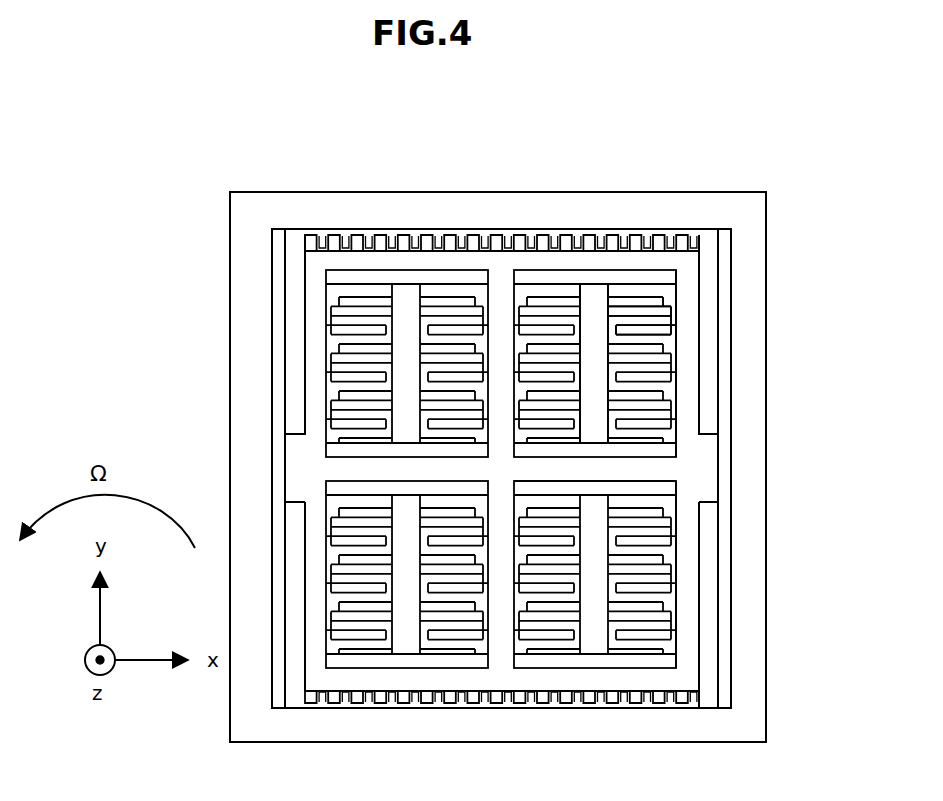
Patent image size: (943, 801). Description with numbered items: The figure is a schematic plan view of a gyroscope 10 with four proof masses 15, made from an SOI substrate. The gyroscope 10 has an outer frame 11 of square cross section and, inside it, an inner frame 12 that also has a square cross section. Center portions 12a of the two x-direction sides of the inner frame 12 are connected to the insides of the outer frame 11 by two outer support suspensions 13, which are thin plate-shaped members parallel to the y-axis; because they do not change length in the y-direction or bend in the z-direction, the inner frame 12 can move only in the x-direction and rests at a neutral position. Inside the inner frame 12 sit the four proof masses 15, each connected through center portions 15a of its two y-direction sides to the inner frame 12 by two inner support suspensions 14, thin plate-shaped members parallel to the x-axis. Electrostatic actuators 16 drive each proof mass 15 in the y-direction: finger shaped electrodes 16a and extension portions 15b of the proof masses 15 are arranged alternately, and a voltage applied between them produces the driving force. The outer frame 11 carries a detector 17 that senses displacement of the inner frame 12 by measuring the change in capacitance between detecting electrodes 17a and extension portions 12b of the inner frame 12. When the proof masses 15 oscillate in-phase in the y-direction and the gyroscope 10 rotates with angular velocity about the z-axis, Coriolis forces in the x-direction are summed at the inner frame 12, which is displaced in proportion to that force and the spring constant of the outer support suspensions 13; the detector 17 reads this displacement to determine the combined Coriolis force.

The gyroscope 10 is at (554, 156).
The outer frame 11 is at (712, 200).
The inner frame 12 is at (688, 290).
The center portions 12a is at (710, 470).
The extension portions 12b is at (338, 237).
The outer support suspensions 13 is at (283, 318).
The inner support suspensions 14 is at (664, 496).
The proof masses 15 is at (350, 299).
The center portions 15a is at (597, 288).
The extension portions 15b is at (668, 302).
The actuators 16 is at (670, 346).
The finger shaped electrodes 16a is at (672, 325).
The detector 17 is at (457, 224).
The detecting electrodes 17a is at (351, 236).